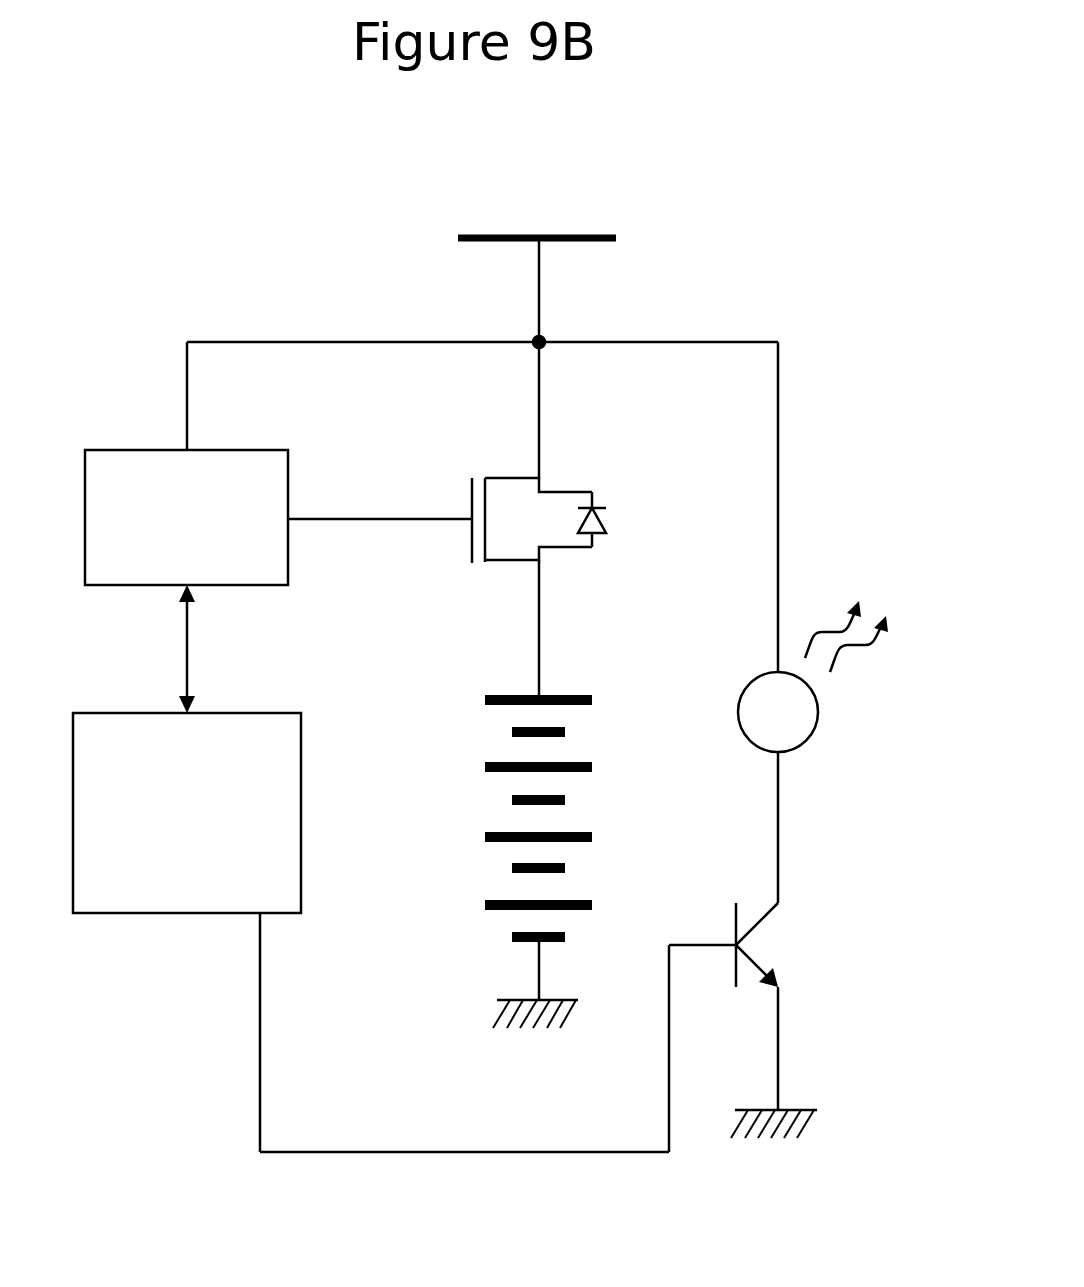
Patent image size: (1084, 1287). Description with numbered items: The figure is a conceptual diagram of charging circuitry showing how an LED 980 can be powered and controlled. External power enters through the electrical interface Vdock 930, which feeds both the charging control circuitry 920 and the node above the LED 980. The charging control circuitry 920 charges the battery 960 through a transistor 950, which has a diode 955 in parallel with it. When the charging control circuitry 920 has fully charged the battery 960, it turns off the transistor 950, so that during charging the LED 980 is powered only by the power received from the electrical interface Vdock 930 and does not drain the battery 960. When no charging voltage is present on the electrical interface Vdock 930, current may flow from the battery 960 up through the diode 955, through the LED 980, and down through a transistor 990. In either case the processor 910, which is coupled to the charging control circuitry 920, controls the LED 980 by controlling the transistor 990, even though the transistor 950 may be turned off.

The processor 910 is at (187, 813).
The charging control circuitry 920 is at (186, 517).
The electrical interface Vdock 930 is at (537, 216).
The transistor 950 is at (526, 498).
The diode 955 is at (624, 519).
The battery 960 is at (512, 818).
The LED 980 is at (813, 676).
The transistor 990 is at (750, 945).